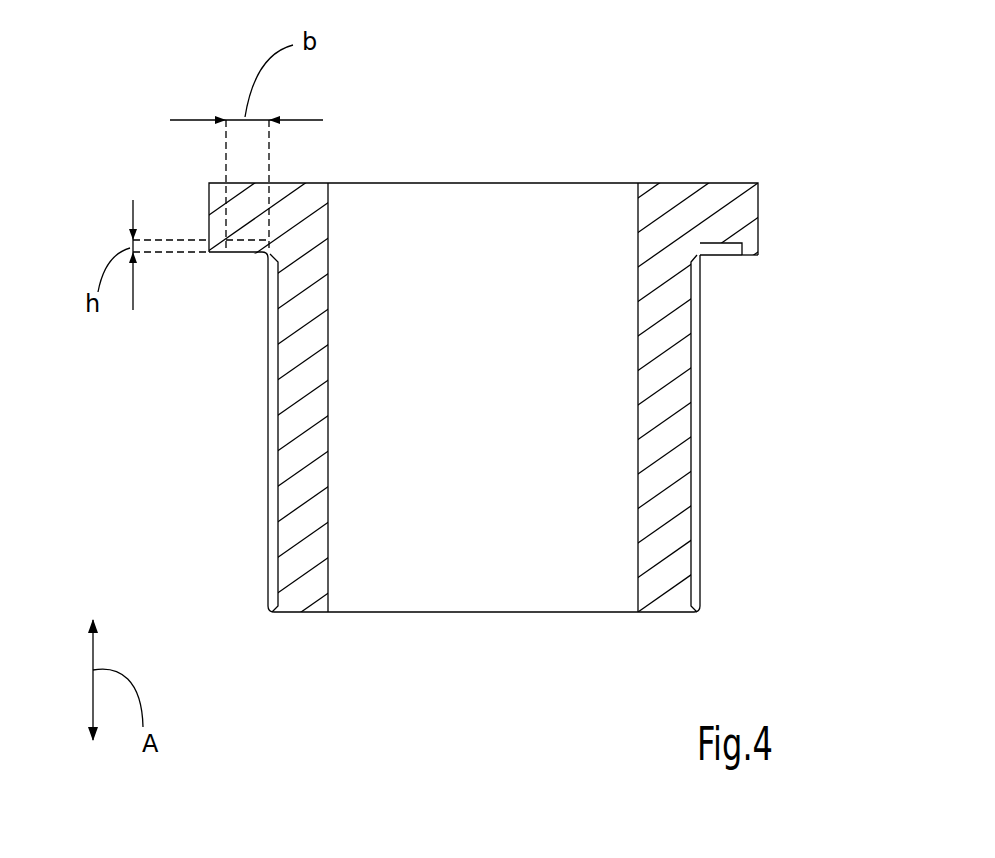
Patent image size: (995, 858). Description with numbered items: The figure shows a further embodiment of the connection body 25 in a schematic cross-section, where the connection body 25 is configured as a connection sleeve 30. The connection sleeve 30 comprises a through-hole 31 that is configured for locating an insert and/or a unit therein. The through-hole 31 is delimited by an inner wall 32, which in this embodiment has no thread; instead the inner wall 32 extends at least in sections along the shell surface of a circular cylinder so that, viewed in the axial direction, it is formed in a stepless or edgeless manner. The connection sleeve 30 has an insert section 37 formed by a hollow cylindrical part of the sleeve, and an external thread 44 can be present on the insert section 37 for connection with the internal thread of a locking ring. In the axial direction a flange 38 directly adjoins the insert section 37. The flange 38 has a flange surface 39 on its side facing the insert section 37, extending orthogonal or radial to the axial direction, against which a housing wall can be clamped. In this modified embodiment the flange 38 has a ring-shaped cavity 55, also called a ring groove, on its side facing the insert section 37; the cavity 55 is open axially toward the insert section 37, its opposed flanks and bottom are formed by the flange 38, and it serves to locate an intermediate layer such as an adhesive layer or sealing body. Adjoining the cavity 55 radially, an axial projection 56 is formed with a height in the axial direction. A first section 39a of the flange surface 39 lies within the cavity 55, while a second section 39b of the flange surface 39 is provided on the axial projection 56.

The connection body 25 is at (538, 361).
The connection sleeve 30 is at (723, 143).
The through-hole 31 is at (498, 588).
The inner wall 32 is at (331, 583).
The insert section 37 is at (232, 433).
The flange 38 is at (748, 200).
The flange surface 39 is at (783, 329).
The first section of flange surface 39a is at (720, 258).
The second section of flange surface 39b is at (797, 297).
The external thread 44 is at (693, 479).
The ring-shaped cavity 55 is at (247, 248).
The axial projection 56 is at (753, 247).